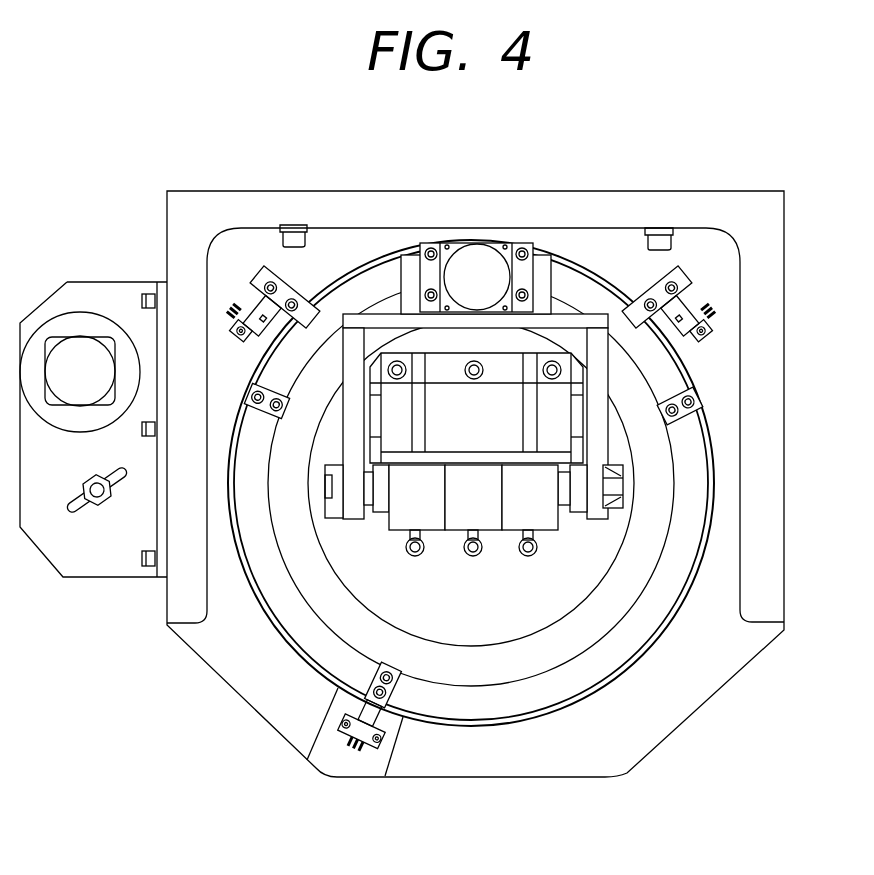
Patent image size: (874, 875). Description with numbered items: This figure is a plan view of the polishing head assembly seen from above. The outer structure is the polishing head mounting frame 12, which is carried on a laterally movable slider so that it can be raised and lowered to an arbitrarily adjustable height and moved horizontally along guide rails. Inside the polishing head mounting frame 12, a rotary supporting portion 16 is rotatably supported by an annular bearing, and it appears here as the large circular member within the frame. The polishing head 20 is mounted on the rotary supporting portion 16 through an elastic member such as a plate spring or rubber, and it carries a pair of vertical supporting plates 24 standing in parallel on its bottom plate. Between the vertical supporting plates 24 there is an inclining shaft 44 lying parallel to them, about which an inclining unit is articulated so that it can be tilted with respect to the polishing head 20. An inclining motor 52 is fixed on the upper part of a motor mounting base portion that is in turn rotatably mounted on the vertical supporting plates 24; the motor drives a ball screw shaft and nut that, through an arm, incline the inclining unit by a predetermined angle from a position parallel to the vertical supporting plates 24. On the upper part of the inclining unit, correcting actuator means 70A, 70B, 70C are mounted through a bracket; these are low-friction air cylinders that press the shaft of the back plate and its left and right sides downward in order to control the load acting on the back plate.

The polishing head mounting frame 12 is at (185, 220).
The rotary supporting portion 16 is at (278, 600).
The polishing head 20 is at (567, 298).
The vertical supporting plates 24 is at (352, 350).
The inclining shaft 44 is at (618, 488).
The inclining motor 52 is at (478, 262).
The correcting actuator means 70A is at (400, 515).
The correcting actuator means 70B is at (462, 518).
The correcting actuator means 70C is at (543, 517).